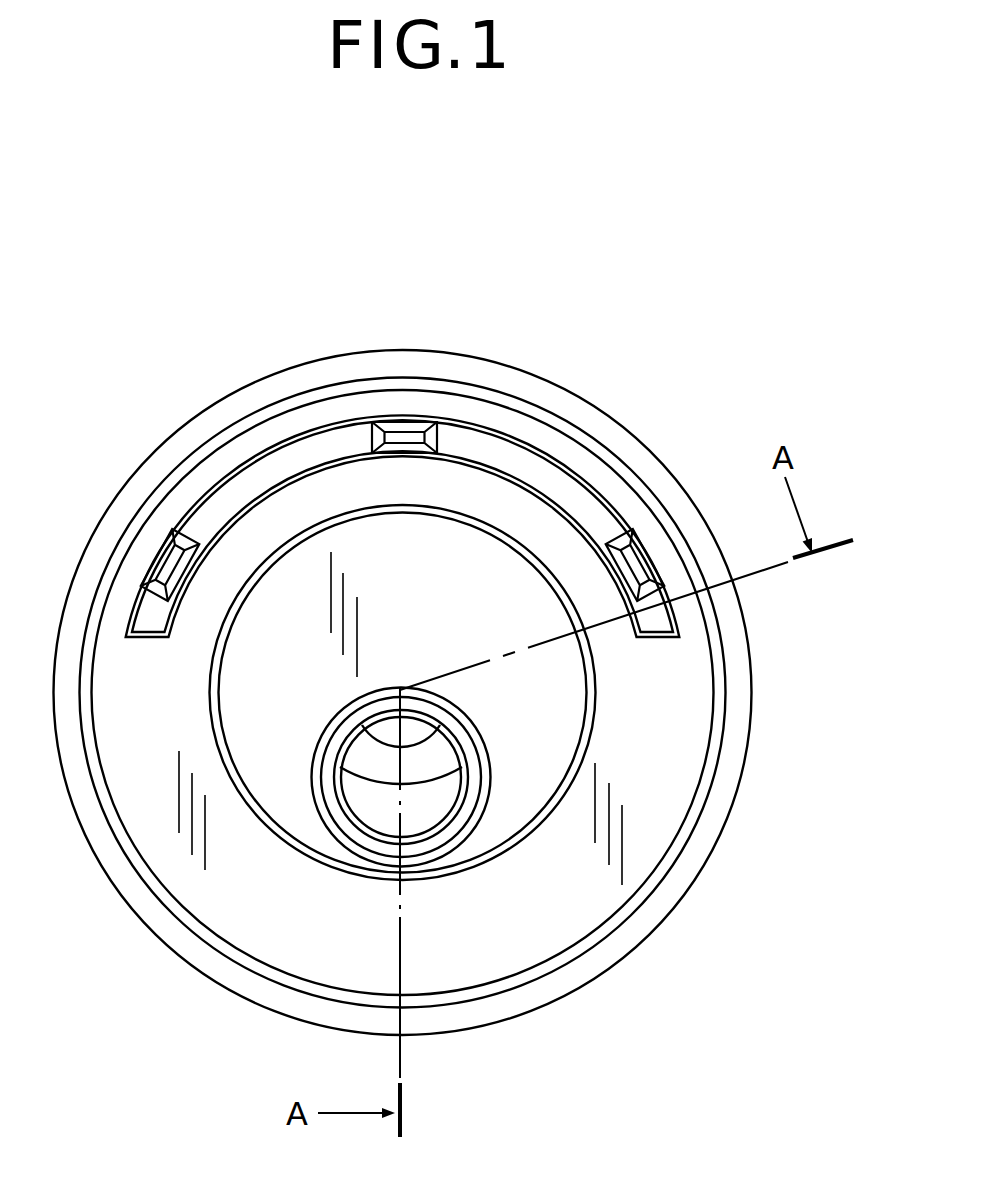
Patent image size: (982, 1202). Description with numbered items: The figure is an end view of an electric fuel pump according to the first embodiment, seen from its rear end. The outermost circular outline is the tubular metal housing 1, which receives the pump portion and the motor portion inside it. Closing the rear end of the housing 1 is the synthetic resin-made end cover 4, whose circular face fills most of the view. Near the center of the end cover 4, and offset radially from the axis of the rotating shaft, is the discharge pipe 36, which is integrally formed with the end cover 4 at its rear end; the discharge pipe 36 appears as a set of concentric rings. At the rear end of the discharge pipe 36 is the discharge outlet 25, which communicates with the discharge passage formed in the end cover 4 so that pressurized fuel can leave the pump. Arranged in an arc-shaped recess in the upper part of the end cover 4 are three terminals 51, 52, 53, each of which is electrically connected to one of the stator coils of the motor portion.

The housing 1 is at (251, 385).
The end cover 4 is at (670, 797).
The discharge outlet 25 is at (423, 815).
The discharge pipe 36 is at (470, 825).
The terminal 51 is at (168, 562).
The terminal 52 is at (400, 425).
The terminal 53 is at (645, 562).